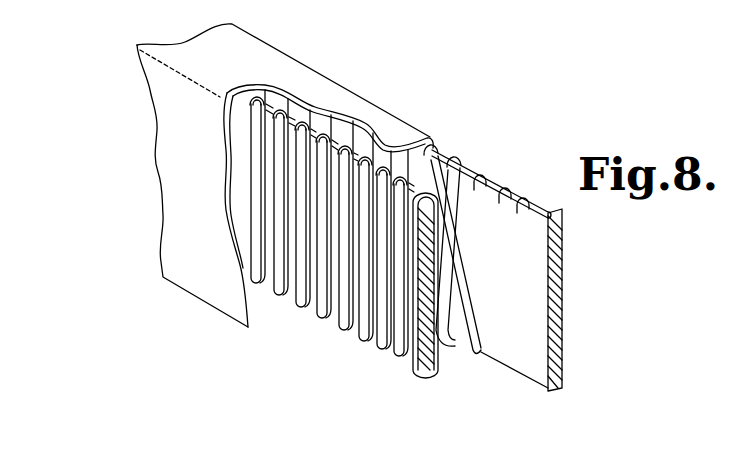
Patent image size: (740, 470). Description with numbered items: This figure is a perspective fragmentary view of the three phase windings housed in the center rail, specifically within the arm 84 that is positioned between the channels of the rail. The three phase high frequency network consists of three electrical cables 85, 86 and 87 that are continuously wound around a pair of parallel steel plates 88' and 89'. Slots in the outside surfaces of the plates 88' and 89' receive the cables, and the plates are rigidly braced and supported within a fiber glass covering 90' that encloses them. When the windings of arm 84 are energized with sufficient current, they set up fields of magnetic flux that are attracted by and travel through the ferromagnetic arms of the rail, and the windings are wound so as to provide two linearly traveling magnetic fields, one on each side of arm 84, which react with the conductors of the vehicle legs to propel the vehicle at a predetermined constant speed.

The arm 84 is at (608, 302).
The electrical cable 85 is at (418, 375).
The electrical cable 86 is at (398, 366).
The electrical cable 87 is at (378, 353).
The steel plate 88' is at (446, 313).
The steel plate 89' is at (529, 336).
The fiber glass covering 90' is at (285, 175).